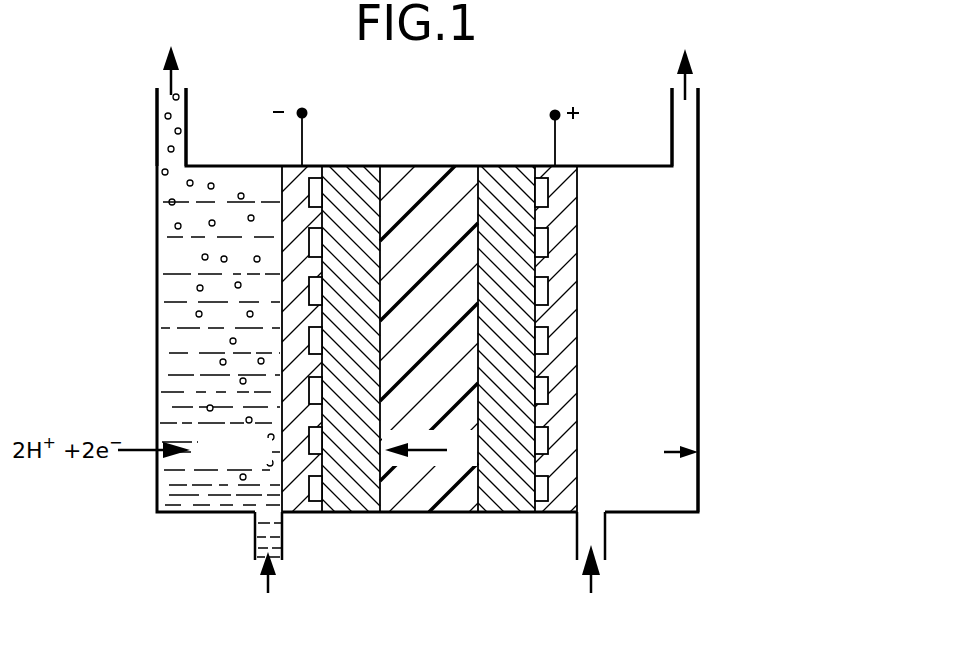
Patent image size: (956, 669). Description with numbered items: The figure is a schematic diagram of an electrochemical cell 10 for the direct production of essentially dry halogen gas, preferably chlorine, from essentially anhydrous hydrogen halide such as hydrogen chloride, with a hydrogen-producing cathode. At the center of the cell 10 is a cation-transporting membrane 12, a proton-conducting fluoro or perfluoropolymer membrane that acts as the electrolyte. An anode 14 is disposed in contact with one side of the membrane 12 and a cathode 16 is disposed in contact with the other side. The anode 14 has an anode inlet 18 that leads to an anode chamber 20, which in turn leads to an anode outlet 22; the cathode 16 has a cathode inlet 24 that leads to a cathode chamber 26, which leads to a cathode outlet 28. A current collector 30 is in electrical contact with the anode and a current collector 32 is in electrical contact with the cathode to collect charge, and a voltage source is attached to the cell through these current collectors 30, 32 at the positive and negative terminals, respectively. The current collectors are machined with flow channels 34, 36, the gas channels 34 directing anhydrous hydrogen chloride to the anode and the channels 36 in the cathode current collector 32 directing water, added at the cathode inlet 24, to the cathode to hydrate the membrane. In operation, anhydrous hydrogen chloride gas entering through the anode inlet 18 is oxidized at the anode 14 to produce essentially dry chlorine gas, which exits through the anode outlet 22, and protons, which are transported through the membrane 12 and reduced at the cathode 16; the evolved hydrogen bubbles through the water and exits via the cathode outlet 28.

The electrochemical cell 10 is at (158, 596).
The cation-transporting membrane 12 is at (412, 500).
The anode 14 is at (521, 185).
The cathode 16 is at (346, 185).
The anode inlet 18 is at (606, 528).
The anode chamber 20 is at (699, 218).
The anode outlet 22 is at (700, 128).
The cathode inlet 24 is at (255, 532).
The cathode chamber 26 is at (165, 233).
The cathode outlet 28 is at (157, 125).
The anode current collector 30 is at (560, 185).
The cathode current collector 32 is at (295, 185).
The flow channels 34 is at (542, 190).
The flow channels 36 is at (317, 190).